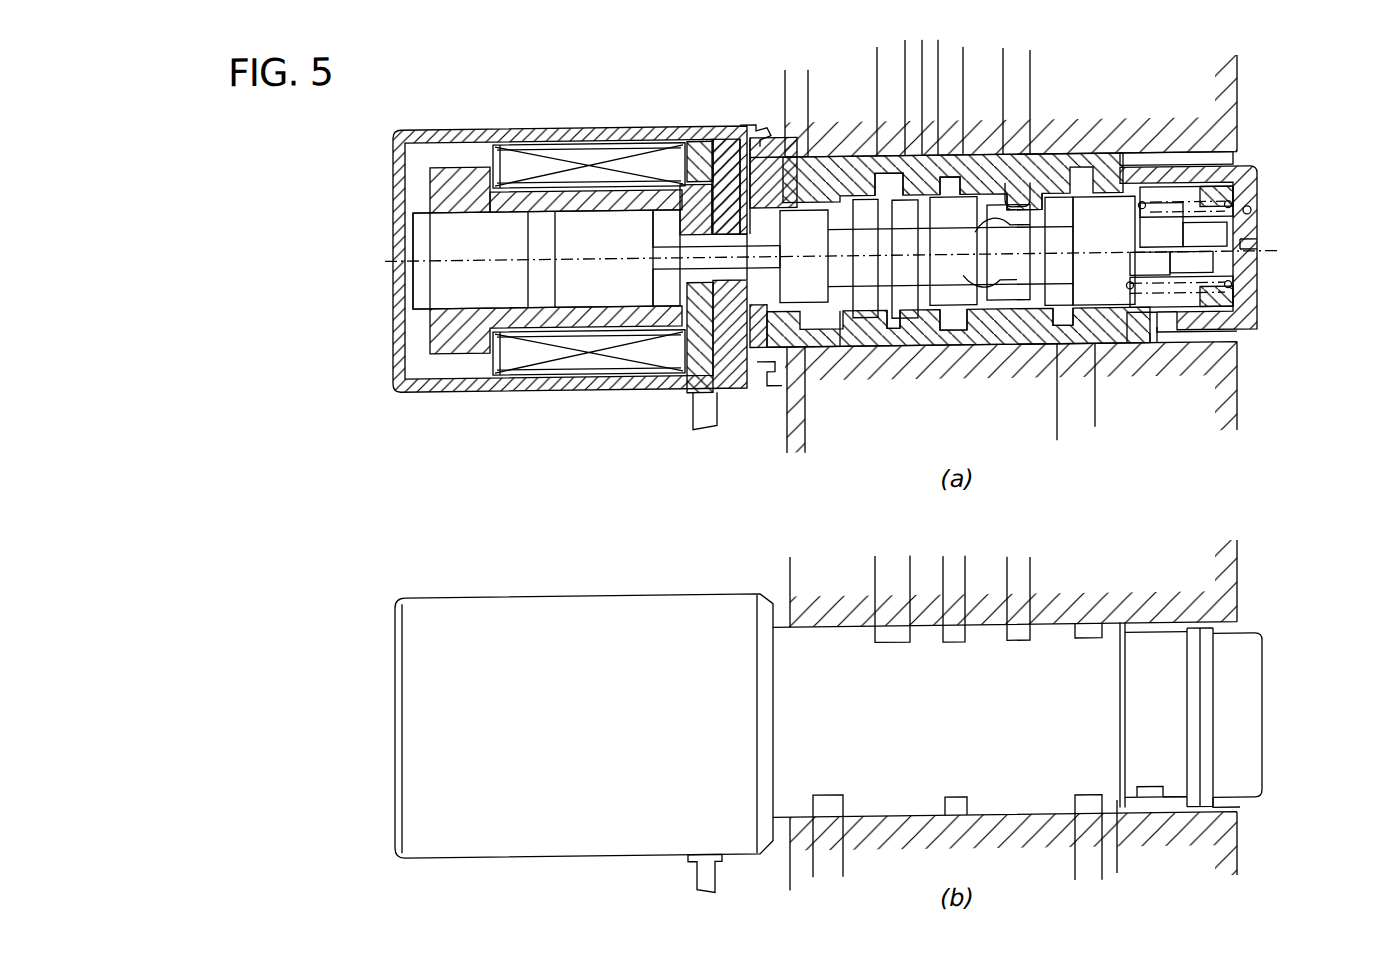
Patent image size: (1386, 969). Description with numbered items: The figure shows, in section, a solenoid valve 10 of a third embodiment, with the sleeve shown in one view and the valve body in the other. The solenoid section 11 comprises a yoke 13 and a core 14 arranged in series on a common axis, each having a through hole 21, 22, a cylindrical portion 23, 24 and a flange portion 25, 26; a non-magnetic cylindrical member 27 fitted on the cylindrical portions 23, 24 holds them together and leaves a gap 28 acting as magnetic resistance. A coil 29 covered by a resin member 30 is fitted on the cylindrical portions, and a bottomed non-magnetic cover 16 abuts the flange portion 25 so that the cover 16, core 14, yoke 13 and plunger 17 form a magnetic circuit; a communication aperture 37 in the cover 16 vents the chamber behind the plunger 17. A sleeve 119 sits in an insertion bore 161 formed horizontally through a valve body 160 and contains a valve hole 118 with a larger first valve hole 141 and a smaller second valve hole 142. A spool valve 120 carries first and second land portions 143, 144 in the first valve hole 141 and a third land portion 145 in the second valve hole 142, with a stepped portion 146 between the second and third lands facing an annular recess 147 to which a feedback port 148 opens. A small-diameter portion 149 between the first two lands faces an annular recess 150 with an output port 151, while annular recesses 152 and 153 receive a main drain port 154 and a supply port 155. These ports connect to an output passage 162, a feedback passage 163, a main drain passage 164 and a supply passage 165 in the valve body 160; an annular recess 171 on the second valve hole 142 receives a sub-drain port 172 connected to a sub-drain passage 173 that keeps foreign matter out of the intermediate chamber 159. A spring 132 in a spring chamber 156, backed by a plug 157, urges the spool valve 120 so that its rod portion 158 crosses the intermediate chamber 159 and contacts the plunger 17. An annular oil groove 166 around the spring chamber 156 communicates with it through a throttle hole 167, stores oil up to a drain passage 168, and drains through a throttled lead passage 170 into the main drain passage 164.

The solenoid valve 10 is at (776, 57).
The solenoid section 11 is at (583, 115).
The yoke 13 is at (470, 168).
The core 14 is at (745, 249).
The cover 16 is at (657, 126).
The plunger 17 is at (532, 293).
The through hole 21 is at (467, 297).
The through hole 22 is at (720, 281).
The cylindrical portion 23 is at (583, 310).
The cylindrical portion 24 is at (688, 306).
The flange portion 25 is at (441, 163).
The flange portion 26 is at (722, 148).
The cylindrical member 27 is at (628, 190).
The gap 28 is at (650, 310).
The coil 29 is at (546, 161).
The resin member 30 is at (692, 168).
The communication aperture 37 is at (498, 378).
The valve hole 118 is at (1105, 200).
The sleeve 119 is at (1250, 175).
The spool valve 120 is at (1062, 300).
The spring 132 is at (1255, 215).
The first valve hole 141 is at (937, 351).
The second valve hole 142 is at (793, 215).
The first land portion 143 is at (1083, 203).
The second land portion 144 is at (912, 351).
The third land portion 145 is at (810, 220).
The stepped portion 146 is at (887, 351).
The annular recess 147 is at (922, 85).
The feedback port 148 is at (883, 168).
The small-diameter portion 149 is at (1000, 312).
The annular recess 150 is at (998, 349).
The output port 151 is at (1050, 218).
The annular recess 152 is at (1085, 338).
The annular recess 153 is at (940, 302).
The main drain port 154 is at (1043, 850).
The supply port 155 is at (973, 164).
The spring chamber 156 is at (1163, 199).
The plug 157 is at (1262, 281).
The rod portion 158 is at (767, 126).
The intermediate chamber 159 is at (768, 365).
The valve body 160 is at (1240, 105).
The insertion bore 161 is at (1228, 350).
The output passage 162 is at (1031, 78).
The feedback passage 163 is at (877, 78).
The main drain passage 164 is at (1095, 430).
The supply passage 165 is at (962, 84).
The annular oil groove 166 is at (1168, 352).
The throttle hole 167 is at (1165, 359).
The drain passage 168 is at (1237, 155).
The lead passage 170 is at (1150, 344).
The annular recess 171 is at (799, 416).
The sub-drain port 172 is at (858, 351).
The sub-drain passage 173 is at (835, 426).